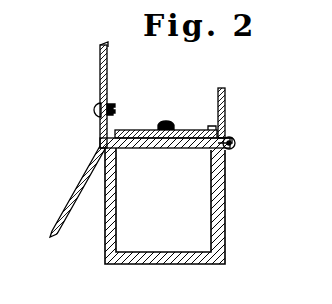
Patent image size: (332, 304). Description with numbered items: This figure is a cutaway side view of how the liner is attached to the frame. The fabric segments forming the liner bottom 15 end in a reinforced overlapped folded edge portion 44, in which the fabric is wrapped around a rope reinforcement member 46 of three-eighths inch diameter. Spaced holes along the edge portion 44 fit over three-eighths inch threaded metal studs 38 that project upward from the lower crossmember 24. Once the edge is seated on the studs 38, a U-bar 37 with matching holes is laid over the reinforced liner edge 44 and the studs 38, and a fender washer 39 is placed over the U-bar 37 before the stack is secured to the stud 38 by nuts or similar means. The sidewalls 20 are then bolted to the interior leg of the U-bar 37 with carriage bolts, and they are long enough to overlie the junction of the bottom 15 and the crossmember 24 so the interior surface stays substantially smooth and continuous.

The bottom 15 is at (78, 183).
The sidewalls 20 is at (100, 85).
The lower crossmember 24 is at (226, 217).
The U-bar 37 is at (226, 111).
The threaded metal studs 38 is at (171, 126).
The fender washer 39 is at (133, 130).
The reinforced overlapped folded edge portion 44 is at (236, 150).
The rope reinforcement member 46 is at (238, 140).